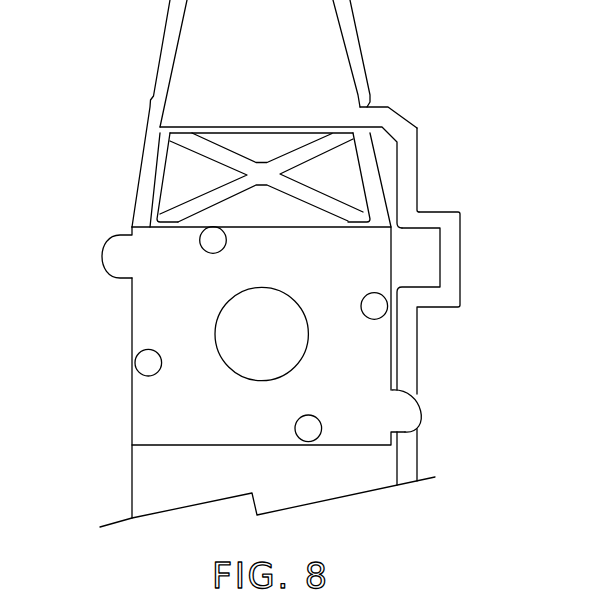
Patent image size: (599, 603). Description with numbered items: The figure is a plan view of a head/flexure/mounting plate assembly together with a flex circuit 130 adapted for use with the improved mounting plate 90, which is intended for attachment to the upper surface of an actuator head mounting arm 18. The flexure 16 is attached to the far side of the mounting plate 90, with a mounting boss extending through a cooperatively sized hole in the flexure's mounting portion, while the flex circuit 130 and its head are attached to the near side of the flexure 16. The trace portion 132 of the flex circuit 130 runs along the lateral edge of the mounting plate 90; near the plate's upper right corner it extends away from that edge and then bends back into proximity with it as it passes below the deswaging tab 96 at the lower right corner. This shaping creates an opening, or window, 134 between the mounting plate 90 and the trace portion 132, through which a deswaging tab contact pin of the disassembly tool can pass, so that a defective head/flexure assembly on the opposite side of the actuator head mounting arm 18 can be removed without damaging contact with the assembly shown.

The flexure 16 is at (363, 60).
The flex circuit 130 is at (333, 90).
The trace portion 132 is at (407, 180).
The opening (window) 134 is at (420, 253).
The deswaging tab 96 is at (120, 257).
The mounting plate 90 is at (278, 262).
The actuator head mounting arm 18 is at (363, 470).